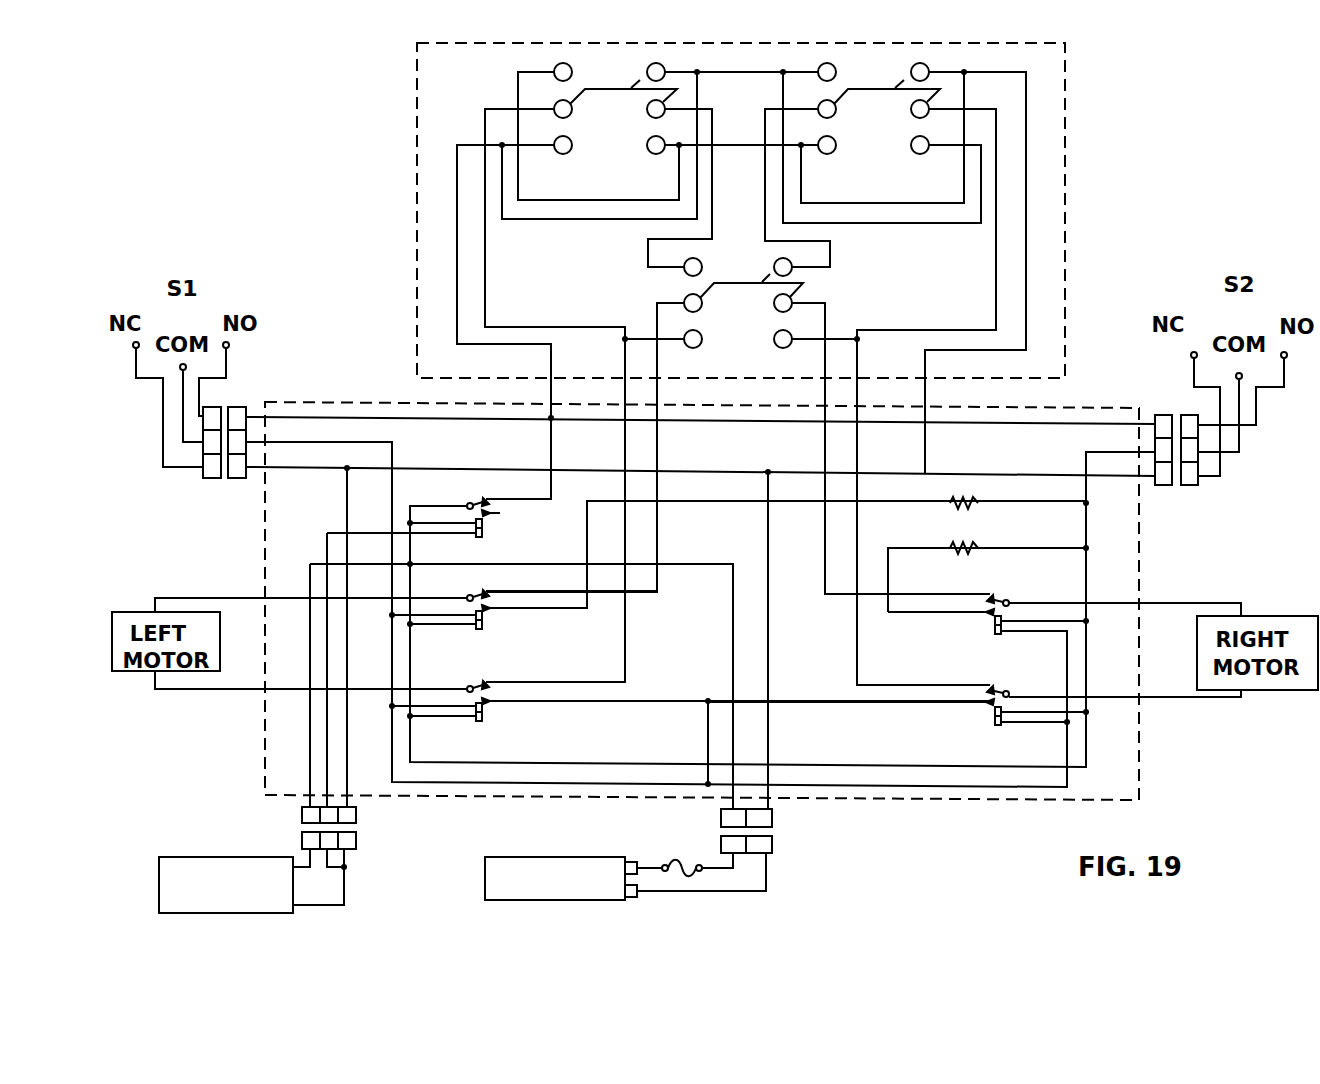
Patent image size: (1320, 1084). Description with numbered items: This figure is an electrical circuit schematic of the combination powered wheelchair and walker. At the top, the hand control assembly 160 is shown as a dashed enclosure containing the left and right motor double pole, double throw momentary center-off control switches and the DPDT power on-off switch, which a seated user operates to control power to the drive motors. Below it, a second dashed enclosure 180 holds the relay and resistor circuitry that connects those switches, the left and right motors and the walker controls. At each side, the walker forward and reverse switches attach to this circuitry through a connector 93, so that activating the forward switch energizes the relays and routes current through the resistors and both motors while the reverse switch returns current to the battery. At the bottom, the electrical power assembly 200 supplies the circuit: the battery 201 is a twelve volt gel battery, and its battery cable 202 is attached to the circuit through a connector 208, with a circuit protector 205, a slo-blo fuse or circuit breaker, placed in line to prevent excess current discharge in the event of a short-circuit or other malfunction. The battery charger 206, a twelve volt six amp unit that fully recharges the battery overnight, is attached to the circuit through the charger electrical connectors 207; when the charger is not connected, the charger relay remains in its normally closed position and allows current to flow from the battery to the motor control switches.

The hand control assembly 160 is at (373, 195).
The relay control circuit 180 is at (374, 368).
The electrical power assembly 200 is at (1204, 250).
The connector 93 is at (198, 478).
The battery 201 is at (625, 905).
The battery cable 202 is at (722, 895).
The circuit protector 205 is at (665, 860).
The battery charger 206 is at (216, 857).
The charger electrical connectors 207 is at (360, 827).
The connector 208 is at (782, 830).